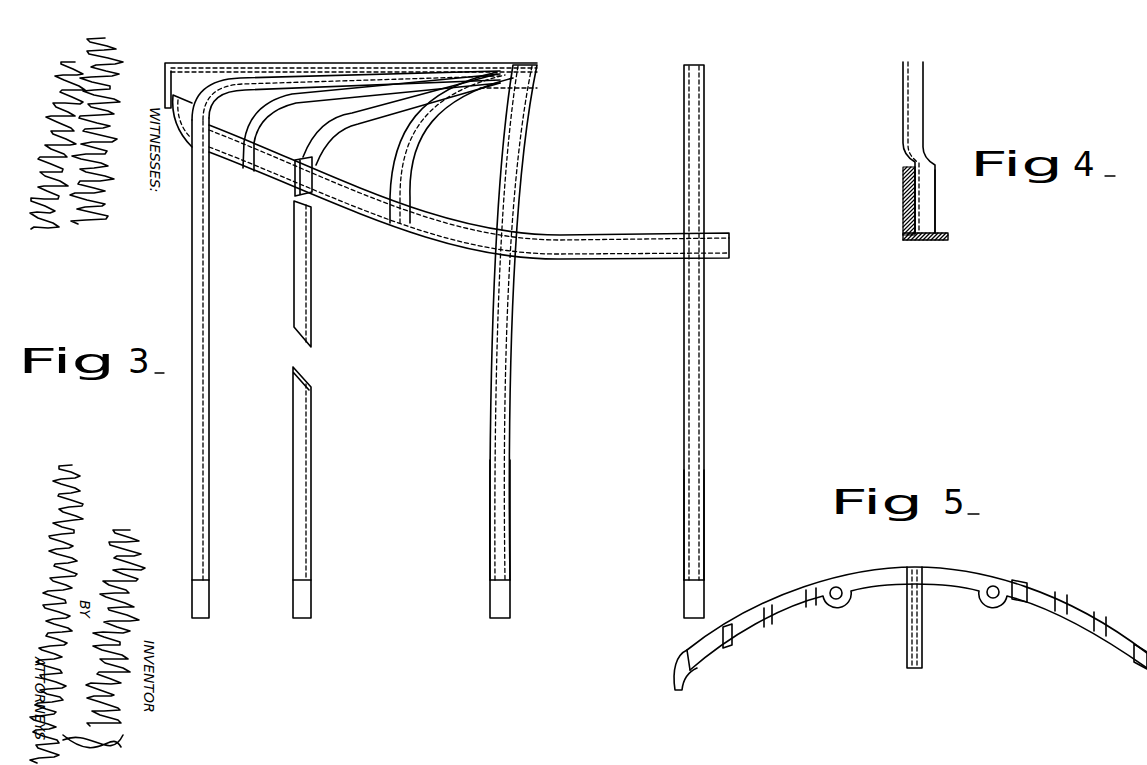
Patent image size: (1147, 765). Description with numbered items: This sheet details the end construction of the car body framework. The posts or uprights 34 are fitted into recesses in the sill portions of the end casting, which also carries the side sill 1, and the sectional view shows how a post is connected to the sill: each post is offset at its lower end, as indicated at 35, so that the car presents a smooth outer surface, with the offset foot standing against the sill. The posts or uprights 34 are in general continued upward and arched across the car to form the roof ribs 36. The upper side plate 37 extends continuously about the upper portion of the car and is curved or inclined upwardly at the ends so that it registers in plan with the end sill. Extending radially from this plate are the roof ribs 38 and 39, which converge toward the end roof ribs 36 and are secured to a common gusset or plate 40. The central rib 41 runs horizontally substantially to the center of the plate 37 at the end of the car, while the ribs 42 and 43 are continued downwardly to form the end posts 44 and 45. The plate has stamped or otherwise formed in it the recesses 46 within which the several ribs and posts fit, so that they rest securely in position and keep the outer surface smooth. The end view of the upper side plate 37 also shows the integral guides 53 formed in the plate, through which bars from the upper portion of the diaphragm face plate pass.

In FIG. 4, the side sill 1 is at (903, 213).
In FIG. 3, the post or upright 34 is at (503, 476).
In FIG. 4, the post or upright 34 is at (903, 90).
In FIG. 3, the offset lower end of post 35 is at (205, 605).
In FIG. 4, the offset lower end of post 35 is at (918, 215).
In FIG. 3, the roof rib 36 is at (700, 180).
In FIG. 3, the upper side plate 37 is at (598, 236).
In FIG. 5, the upper side plate 37 is at (787, 600).
In FIG. 3, the roof rib 38 is at (424, 148).
In FIG. 3, the roof rib 39 is at (279, 109).
In FIG. 3, the gusset or plate 40 is at (494, 73).
In FIG. 3, the central rib 41 is at (235, 64).
In FIG. 5, the central rib 41 is at (914, 567).
In FIG. 3, the rib 42 is at (391, 105).
In FIG. 3, the rib 43 is at (234, 95).
In FIG. 3, the end post 44 is at (317, 421).
In FIG. 3, the end post 45 is at (206, 443).
In FIG. 3, the recess 46 is at (313, 168).
In FIG. 5, the recess 46 is at (727, 627).
In FIG. 5, the integral guide 53 is at (835, 587).